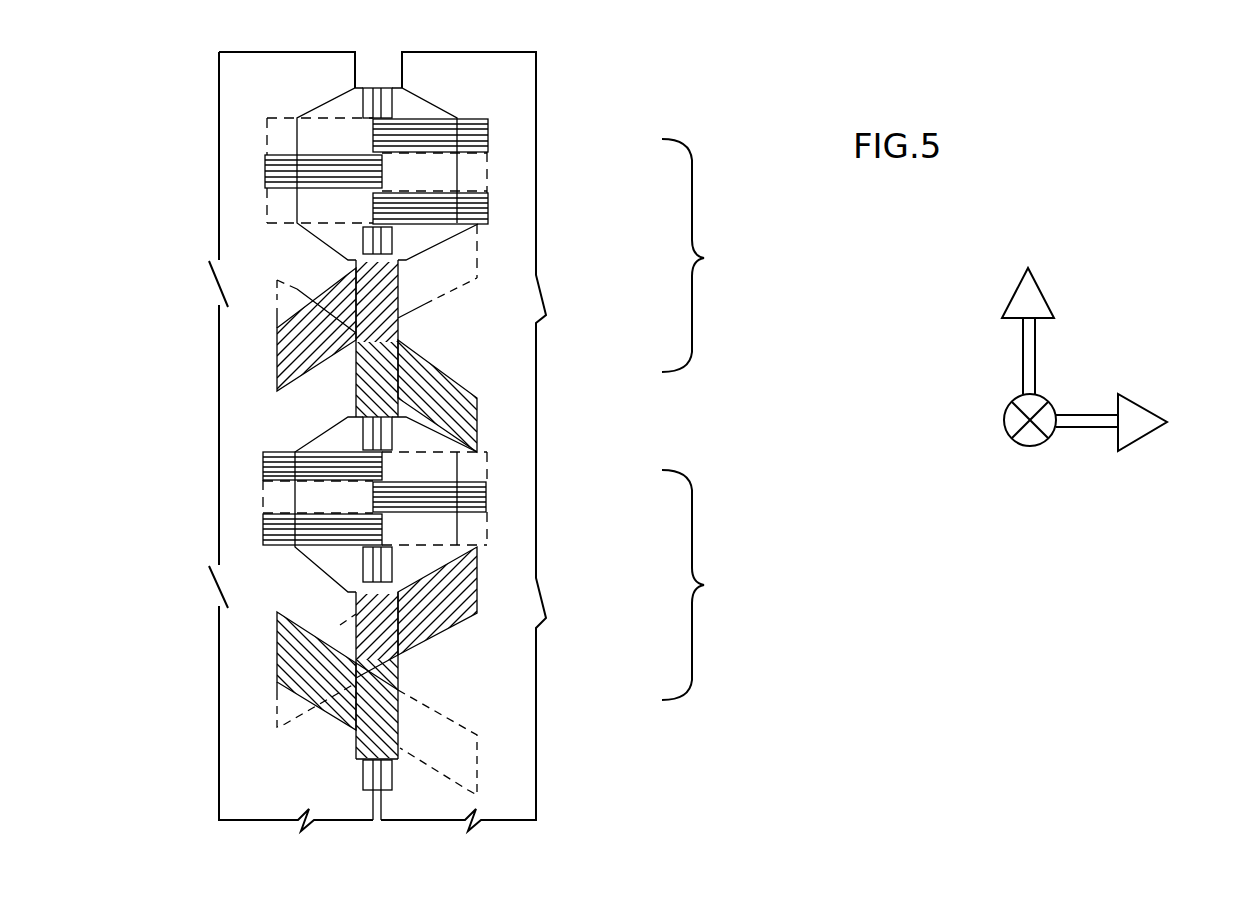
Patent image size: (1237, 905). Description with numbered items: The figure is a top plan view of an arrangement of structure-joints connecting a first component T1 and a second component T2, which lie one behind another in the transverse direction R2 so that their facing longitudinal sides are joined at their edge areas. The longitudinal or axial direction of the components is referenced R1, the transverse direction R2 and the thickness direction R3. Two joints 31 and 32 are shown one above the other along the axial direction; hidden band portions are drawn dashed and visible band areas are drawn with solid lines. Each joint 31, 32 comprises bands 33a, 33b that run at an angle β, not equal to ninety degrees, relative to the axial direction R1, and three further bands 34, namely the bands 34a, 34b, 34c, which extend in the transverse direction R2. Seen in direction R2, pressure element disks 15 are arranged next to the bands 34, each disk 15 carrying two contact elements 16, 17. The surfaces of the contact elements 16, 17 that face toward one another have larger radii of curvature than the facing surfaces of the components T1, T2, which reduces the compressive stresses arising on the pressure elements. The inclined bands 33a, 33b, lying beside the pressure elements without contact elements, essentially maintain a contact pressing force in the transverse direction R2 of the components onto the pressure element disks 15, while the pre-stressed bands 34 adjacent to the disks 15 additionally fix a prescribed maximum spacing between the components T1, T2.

The pressure element disk 15 is at (380, 97).
The contact element 16 is at (343, 115).
The contact element 17 is at (410, 112).
The structure-joint 31 is at (711, 585).
The structure-joint 32 is at (710, 255).
The band 33a is at (280, 352).
The band 33b is at (478, 420).
The band 34 is at (520, 136).
The band 34a is at (487, 127).
The band 34b is at (267, 170).
The band 34c is at (487, 208).
The first component T1 is at (242, 770).
The second component T2 is at (522, 785).
The longitudinal direction R1 is at (1005, 331).
The transverse direction R2 is at (1136, 422).
The thickness direction R3 is at (1002, 427).